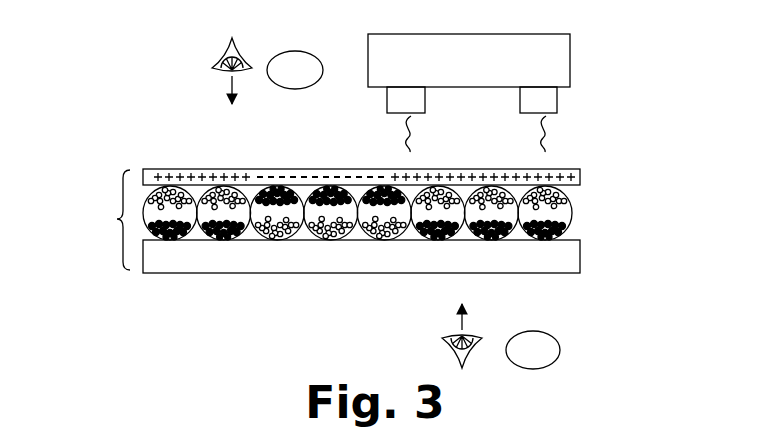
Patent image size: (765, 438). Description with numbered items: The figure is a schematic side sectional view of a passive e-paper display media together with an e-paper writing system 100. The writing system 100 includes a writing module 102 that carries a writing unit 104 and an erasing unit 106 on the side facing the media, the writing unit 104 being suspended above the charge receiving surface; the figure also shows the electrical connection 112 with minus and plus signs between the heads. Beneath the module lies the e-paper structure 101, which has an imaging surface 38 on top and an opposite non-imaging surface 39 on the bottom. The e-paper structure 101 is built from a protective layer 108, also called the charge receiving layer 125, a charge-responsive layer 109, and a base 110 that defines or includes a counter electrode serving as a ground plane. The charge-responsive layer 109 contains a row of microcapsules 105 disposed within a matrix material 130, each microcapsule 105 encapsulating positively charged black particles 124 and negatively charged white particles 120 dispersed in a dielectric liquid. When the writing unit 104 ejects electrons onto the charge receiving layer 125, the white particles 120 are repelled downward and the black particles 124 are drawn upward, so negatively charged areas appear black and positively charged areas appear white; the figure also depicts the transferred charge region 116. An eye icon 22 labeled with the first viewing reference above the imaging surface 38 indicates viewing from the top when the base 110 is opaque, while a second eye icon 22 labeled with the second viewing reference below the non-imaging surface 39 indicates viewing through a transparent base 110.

The e-paper writing system 100 is at (121, 67).
The eye icon 22 is at (240, 53).
The writing module 102 is at (453, 71).
The writing unit 104 is at (387, 98).
The erasing unit 106 is at (557, 101).
The electrical connection 112 is at (470, 138).
The protective layer 108 is at (393, 140).
The charge receiving layer 125 is at (183, 168).
The negative charge region 116 is at (225, 168).
The imaging surface 38 is at (258, 162).
The e-paper structure 101 is at (358, 216).
The microcapsules 105 is at (367, 197).
The matrix material 130 is at (144, 200).
The white particles 120 is at (570, 197).
The black particles 124 is at (566, 232).
The charge-responsive layer 109 is at (140, 232).
The non-imaging surface 39 is at (361, 281).
The base 110 is at (545, 260).